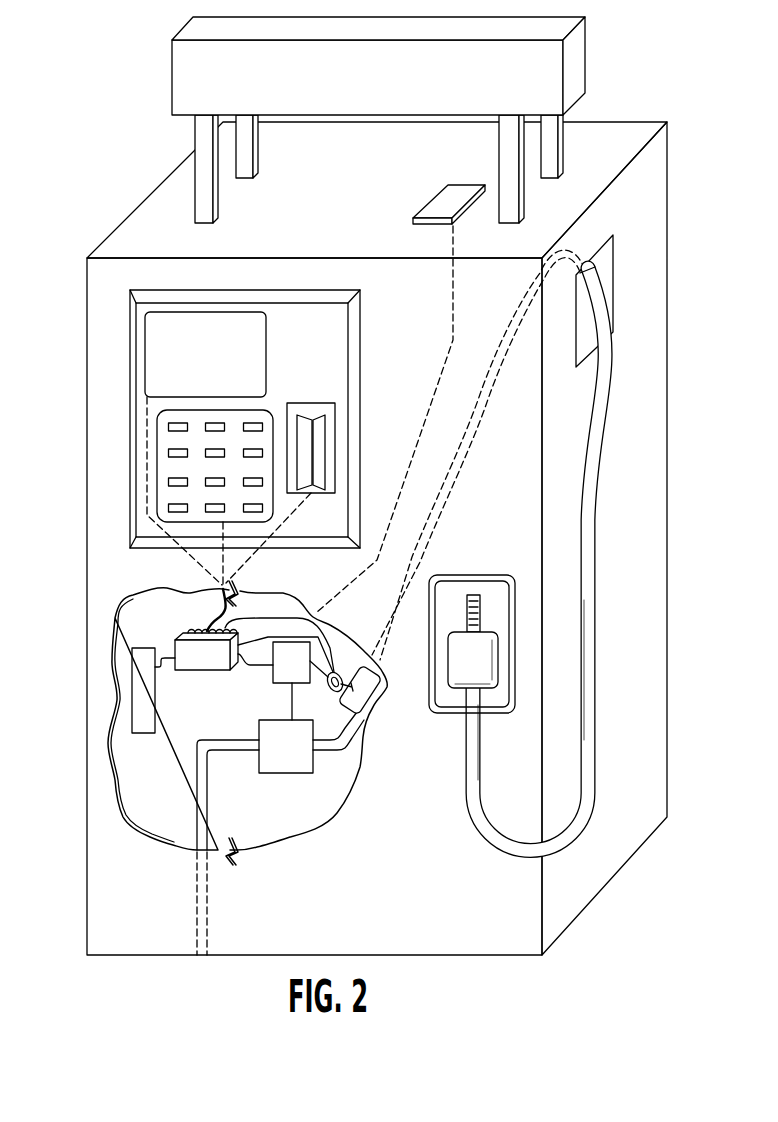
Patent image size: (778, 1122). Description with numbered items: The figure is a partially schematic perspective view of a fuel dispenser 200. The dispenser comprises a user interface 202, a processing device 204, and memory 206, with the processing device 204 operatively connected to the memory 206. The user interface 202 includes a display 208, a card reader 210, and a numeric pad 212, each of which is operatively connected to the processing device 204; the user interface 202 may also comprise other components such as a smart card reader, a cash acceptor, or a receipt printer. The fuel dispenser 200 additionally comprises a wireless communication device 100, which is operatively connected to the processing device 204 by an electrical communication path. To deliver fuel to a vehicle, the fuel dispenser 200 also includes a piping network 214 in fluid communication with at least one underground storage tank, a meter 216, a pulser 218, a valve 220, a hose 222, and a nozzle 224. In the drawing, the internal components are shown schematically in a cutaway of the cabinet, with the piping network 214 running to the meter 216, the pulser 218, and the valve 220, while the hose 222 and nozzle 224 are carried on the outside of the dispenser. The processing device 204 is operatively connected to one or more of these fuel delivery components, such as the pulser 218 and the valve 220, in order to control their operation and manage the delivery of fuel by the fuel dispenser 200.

The fuel dispenser 200 is at (85, 218).
The wireless communication device 100 is at (437, 195).
The user interface 202 is at (333, 337).
The display 208 is at (216, 357).
The numeric pad 212 is at (253, 421).
The card reader 210 is at (302, 408).
The processing device 204 is at (218, 669).
The memory 206 is at (157, 722).
The pulser 218 is at (303, 648).
The meter 216 is at (302, 756).
The valve 220 is at (375, 703).
The piping network 214 is at (433, 528).
The hose 222 is at (586, 652).
The nozzle 224 is at (480, 603).